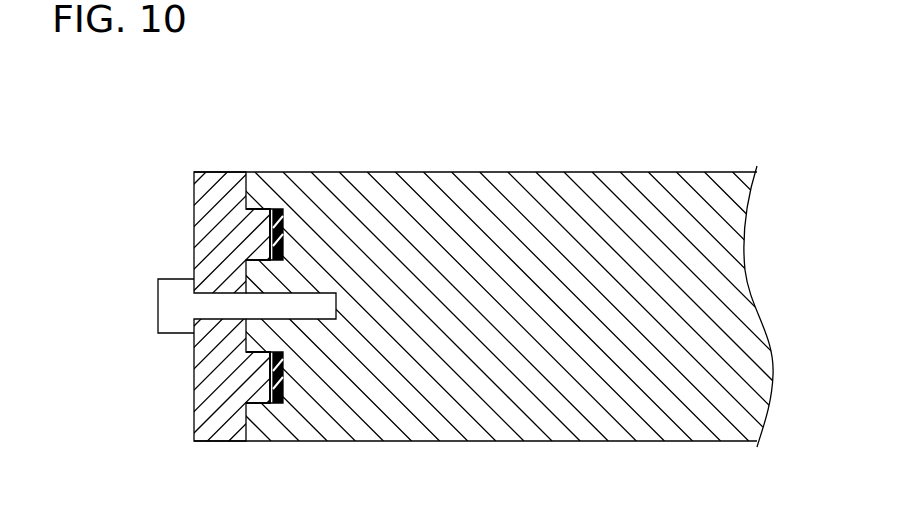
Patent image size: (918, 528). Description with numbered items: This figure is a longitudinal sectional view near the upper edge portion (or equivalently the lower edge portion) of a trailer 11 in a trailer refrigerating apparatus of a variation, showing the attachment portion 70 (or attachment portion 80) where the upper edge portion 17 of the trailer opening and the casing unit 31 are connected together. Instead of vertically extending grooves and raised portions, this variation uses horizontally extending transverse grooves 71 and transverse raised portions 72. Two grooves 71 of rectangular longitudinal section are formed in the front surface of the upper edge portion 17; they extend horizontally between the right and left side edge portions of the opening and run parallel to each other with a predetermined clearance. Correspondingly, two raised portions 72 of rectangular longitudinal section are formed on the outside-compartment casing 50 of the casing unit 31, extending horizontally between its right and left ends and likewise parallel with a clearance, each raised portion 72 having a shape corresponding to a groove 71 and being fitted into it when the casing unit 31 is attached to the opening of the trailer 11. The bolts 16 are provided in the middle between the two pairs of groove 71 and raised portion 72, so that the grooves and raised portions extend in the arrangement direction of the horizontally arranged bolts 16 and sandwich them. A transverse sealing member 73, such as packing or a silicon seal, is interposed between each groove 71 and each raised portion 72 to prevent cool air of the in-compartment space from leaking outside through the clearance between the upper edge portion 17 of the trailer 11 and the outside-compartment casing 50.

The trailer 11 is at (460, 250).
The bolt 16 is at (167, 305).
The upper edge portion 17 is at (460, 268).
The casing unit 31 is at (190, 379).
The outside-compartment casing 50 is at (259, 282).
The attachment portion 70 is at (203, 225).
The groove 71 is at (283, 210).
The raised portion 72 is at (261, 215).
The sealing member 73 is at (283, 250).
The attachment portion 80 is at (258, 306).